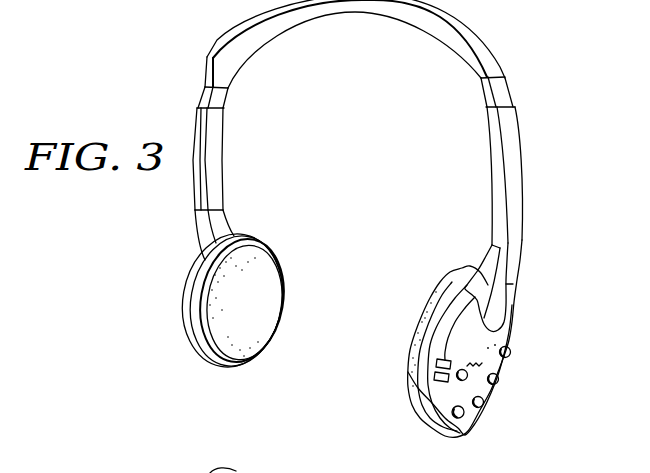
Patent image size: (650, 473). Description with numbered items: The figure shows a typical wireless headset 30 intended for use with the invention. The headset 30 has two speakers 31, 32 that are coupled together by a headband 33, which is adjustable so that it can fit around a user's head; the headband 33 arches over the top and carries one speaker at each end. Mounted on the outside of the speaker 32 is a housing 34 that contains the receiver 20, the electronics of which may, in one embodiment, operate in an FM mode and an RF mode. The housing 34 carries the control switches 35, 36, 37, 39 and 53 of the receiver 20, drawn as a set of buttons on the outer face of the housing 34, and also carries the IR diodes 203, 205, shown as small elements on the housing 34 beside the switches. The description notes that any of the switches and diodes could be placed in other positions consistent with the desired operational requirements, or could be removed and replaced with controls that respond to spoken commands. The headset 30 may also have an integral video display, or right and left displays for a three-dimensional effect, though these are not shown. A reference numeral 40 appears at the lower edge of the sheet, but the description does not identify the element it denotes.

The headset 30 is at (524, 89).
The headband 33 is at (470, 48).
The speaker 31 is at (270, 308).
The speaker 32 is at (423, 310).
The housing 34 is at (519, 307).
The receiver 20 is at (488, 333).
The control switch 35 is at (512, 353).
The control switch 36 is at (499, 381).
The control switch 37 is at (483, 408).
The control switch 39 is at (460, 419).
The control switch 53 is at (440, 415).
The IR diode 203 is at (436, 362).
The IR diode 205 is at (434, 376).
The cord 40 is at (124, 460).